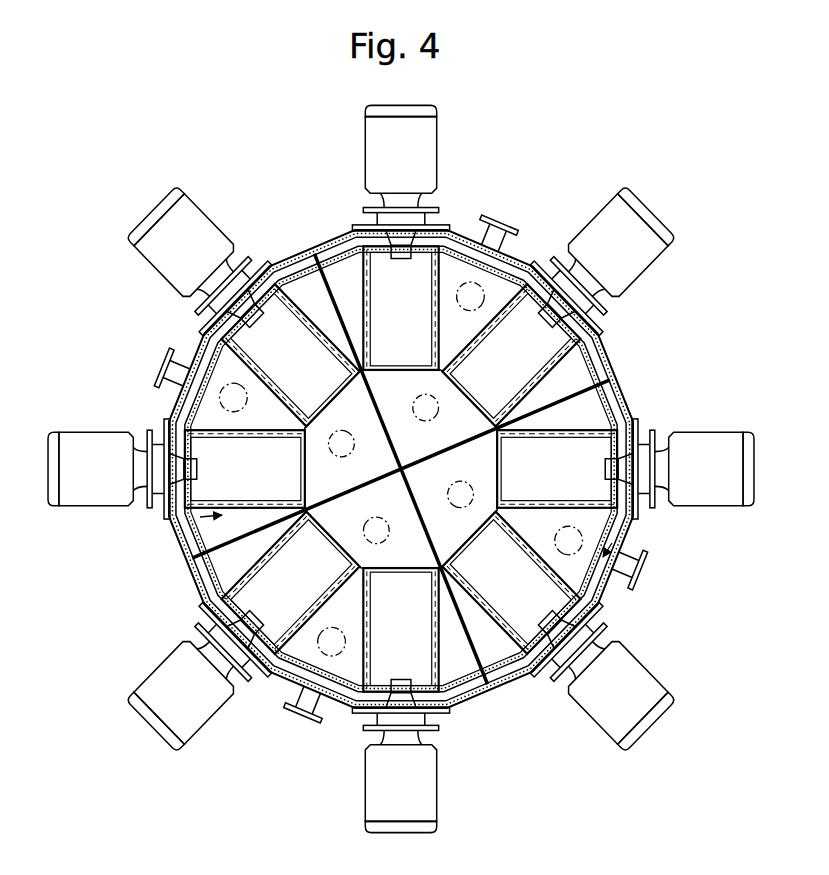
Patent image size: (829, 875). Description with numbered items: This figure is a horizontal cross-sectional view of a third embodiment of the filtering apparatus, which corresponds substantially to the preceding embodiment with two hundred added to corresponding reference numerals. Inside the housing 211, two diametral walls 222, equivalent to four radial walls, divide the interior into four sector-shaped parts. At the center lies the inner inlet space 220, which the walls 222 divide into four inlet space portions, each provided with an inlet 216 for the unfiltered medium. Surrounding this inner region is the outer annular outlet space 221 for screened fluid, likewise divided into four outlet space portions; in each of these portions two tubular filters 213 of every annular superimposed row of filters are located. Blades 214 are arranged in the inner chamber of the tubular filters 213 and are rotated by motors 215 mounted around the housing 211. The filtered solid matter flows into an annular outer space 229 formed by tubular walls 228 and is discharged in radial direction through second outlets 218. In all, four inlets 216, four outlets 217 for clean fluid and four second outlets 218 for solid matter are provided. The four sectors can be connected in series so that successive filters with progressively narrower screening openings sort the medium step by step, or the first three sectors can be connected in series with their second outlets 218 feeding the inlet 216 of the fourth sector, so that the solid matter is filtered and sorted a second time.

The housing 211 is at (632, 402).
The tubular filter 213 is at (367, 297).
The blade 214 is at (372, 314).
The motor 215 is at (431, 151).
The inlet 216 is at (354, 420).
The outlet for clean fluid 217 is at (466, 288).
The second outlet for solid matter 218 is at (505, 243).
The inner inlet space 220 is at (411, 548).
The outer annular outlet space 221 is at (190, 514).
The diametral wall 222 is at (330, 305).
The tubular wall 228 is at (510, 680).
The annular outer space 229 is at (622, 538).